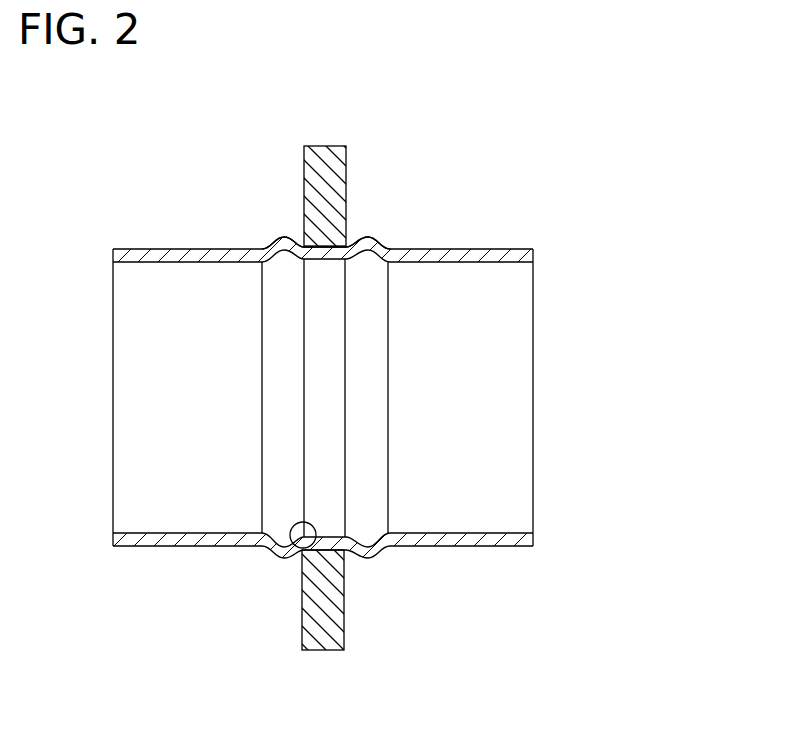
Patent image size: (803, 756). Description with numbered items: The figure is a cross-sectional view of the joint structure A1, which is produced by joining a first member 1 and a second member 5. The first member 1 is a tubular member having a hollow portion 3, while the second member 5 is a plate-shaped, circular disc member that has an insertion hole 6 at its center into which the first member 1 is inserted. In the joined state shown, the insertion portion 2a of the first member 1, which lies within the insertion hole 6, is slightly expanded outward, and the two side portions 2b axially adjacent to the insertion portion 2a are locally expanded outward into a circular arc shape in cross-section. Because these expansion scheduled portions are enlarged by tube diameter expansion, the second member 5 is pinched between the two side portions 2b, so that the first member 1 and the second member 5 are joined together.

The first member 1 is at (527, 250).
The insertion portion 2a is at (327, 247).
The side portions 2b is at (282, 237).
The hollow portion 3 is at (498, 402).
The second member 5 is at (328, 152).
The insertion hole 6 is at (287, 558).
The joint structure A1 is at (580, 200).